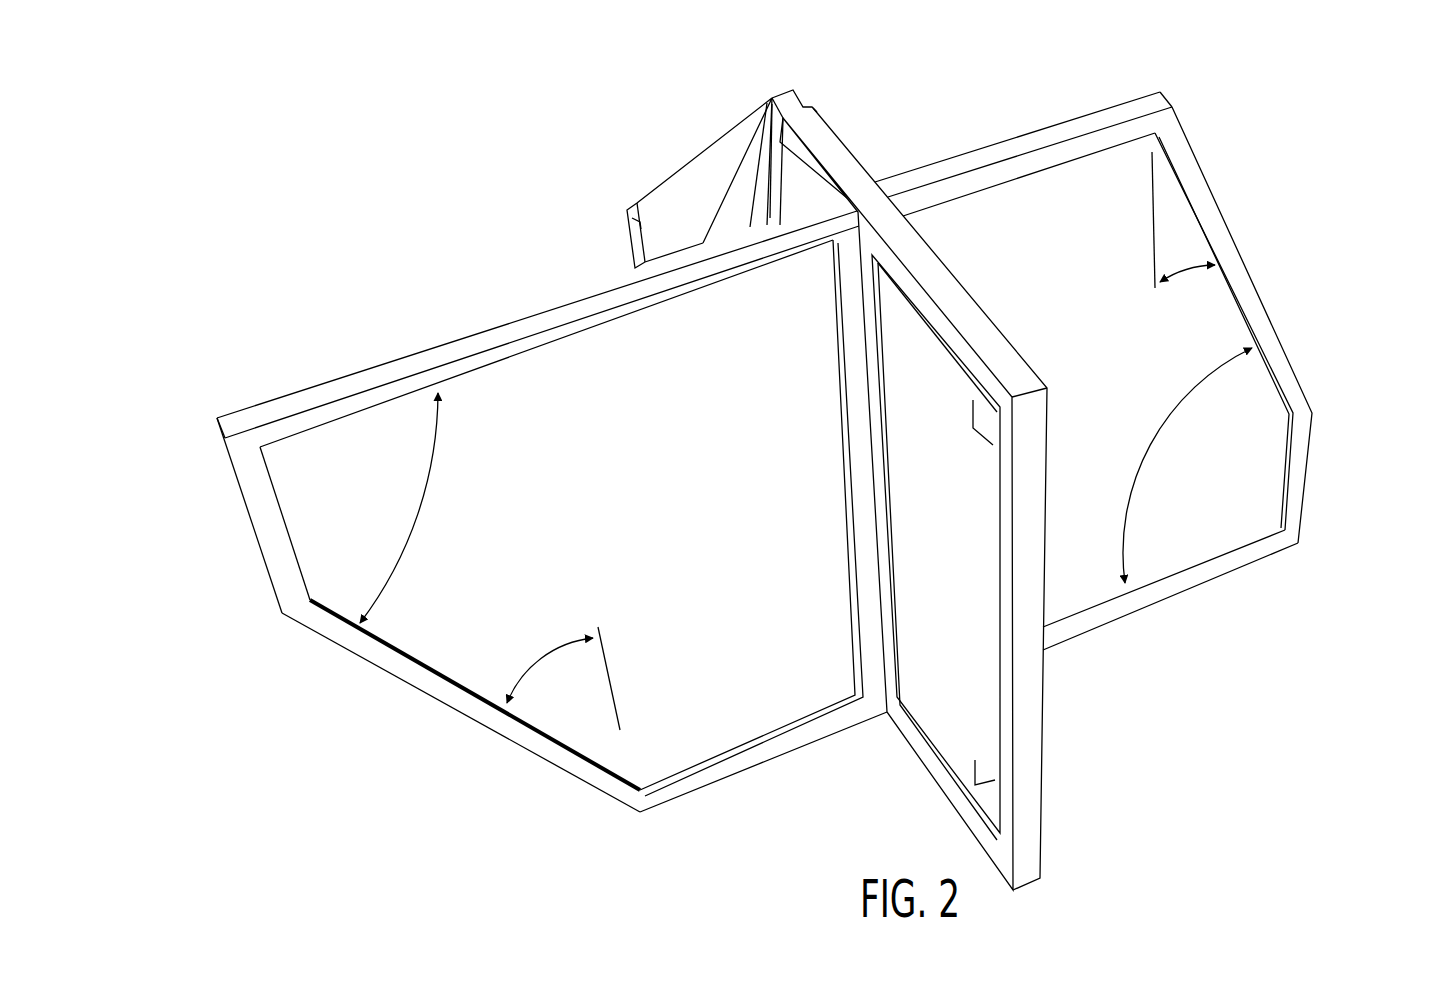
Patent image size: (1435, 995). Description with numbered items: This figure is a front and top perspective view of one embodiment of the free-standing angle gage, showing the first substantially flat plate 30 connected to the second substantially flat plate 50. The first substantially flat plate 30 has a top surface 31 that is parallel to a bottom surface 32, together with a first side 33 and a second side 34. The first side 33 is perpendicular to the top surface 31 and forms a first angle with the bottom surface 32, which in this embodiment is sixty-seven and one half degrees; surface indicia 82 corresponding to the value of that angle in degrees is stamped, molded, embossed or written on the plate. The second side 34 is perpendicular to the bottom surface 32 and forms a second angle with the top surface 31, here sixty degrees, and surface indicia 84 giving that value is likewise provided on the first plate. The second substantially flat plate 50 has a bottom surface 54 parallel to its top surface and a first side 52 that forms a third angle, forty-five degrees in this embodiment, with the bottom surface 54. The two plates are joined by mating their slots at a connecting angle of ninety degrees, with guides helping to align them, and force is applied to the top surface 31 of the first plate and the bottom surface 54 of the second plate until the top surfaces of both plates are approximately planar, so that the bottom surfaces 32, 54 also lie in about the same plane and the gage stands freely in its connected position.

The first substantially flat plate 30 is at (1017, 460).
The top surface 31 is at (969, 526).
The bottom surface 32 is at (694, 263).
The first side 33 is at (1287, 325).
The second side 34 is at (413, 602).
The second substantially flat plate 50 is at (818, 139).
The first side 52 is at (698, 168).
The bottom surface 54 is at (855, 134).
The surface indicia 82 is at (1243, 338).
The surface indicia 84 is at (466, 666).